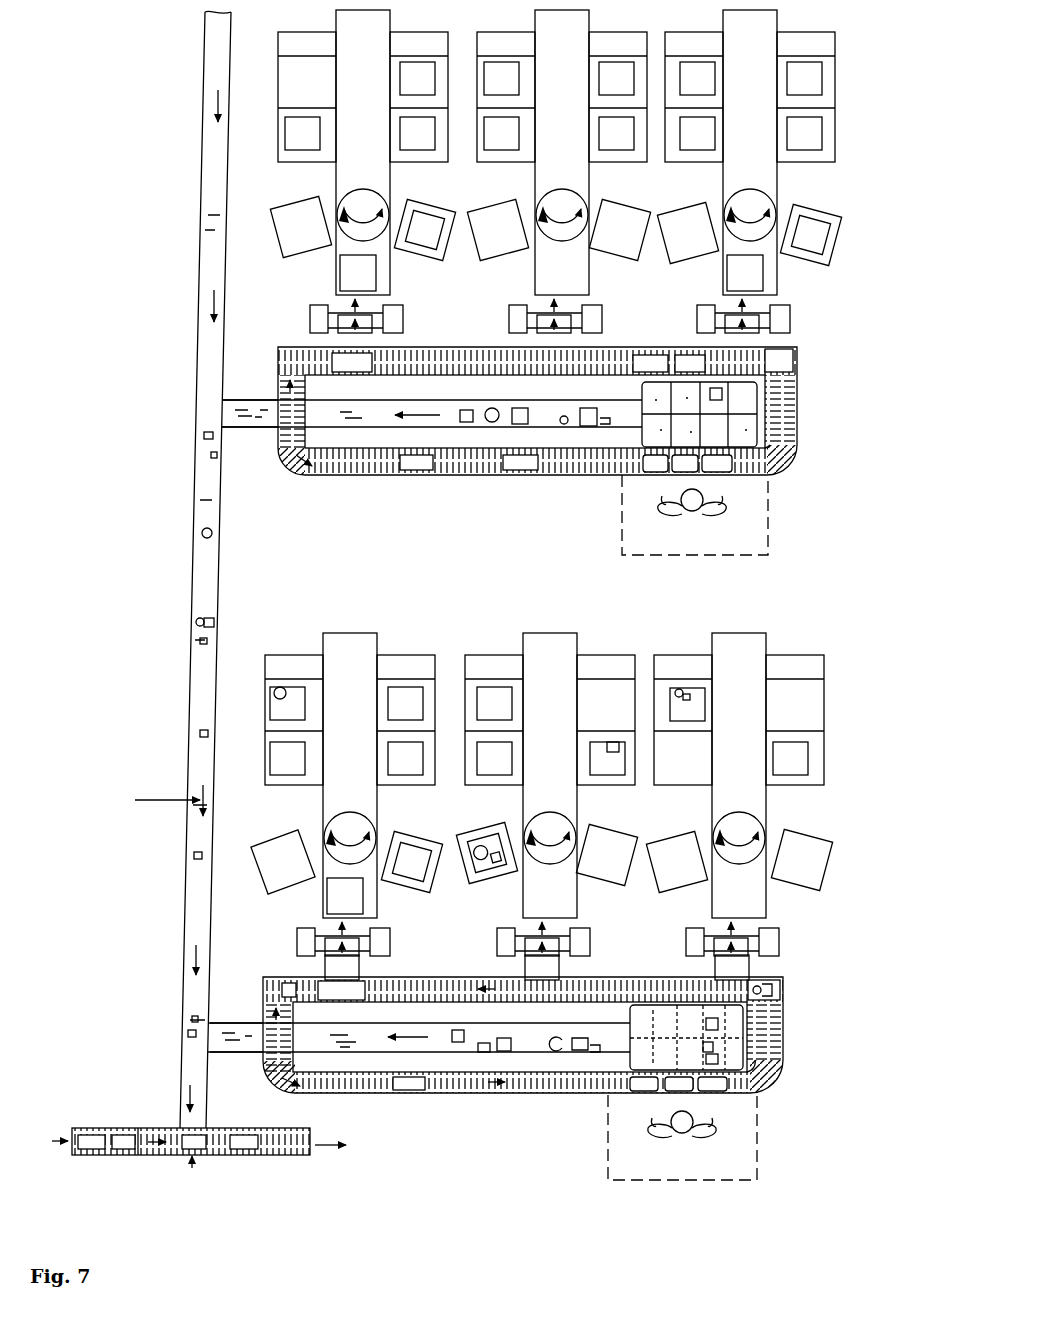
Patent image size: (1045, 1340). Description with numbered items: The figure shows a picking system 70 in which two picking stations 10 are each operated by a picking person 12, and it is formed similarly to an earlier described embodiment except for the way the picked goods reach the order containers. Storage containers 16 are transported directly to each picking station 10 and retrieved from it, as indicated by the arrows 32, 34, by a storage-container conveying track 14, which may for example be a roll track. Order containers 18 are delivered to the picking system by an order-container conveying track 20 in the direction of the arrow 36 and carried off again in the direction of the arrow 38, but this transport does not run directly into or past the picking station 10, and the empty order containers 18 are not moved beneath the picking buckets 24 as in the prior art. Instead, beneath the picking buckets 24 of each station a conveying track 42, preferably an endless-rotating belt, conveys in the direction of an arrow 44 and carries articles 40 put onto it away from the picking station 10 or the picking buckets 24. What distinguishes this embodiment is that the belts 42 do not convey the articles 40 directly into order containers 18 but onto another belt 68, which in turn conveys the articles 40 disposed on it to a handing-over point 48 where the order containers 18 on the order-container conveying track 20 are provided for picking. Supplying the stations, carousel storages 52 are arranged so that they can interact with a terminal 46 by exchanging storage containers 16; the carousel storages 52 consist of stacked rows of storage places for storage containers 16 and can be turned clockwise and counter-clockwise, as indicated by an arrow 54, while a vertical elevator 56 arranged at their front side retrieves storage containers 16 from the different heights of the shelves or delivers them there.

The picking station 10 is at (770, 505).
The picking person 12 is at (698, 510).
The storage-container conveying track 14 is at (462, 346).
The storage containers 16 is at (299, 128).
The order containers 18 is at (97, 1130).
The order-container conveying track 20 is at (147, 1158).
The picking buckets 24 is at (783, 1032).
The arrow 32 is at (510, 478).
The arrow 34 is at (800, 440).
The arrow 36 is at (58, 1128).
The arrow 38 is at (325, 1137).
The articles 40 is at (492, 408).
The conveying track 42 is at (240, 398).
The arrow 44 is at (422, 414).
The terminal 46 is at (500, 974).
The handing-over point 48 is at (193, 1164).
The carousel storages 52 is at (312, 176).
The arrow 54 is at (365, 233).
The vertical elevator 56 is at (300, 321).
The belt 68 is at (222, 483).
The picking system 70 is at (158, 522).